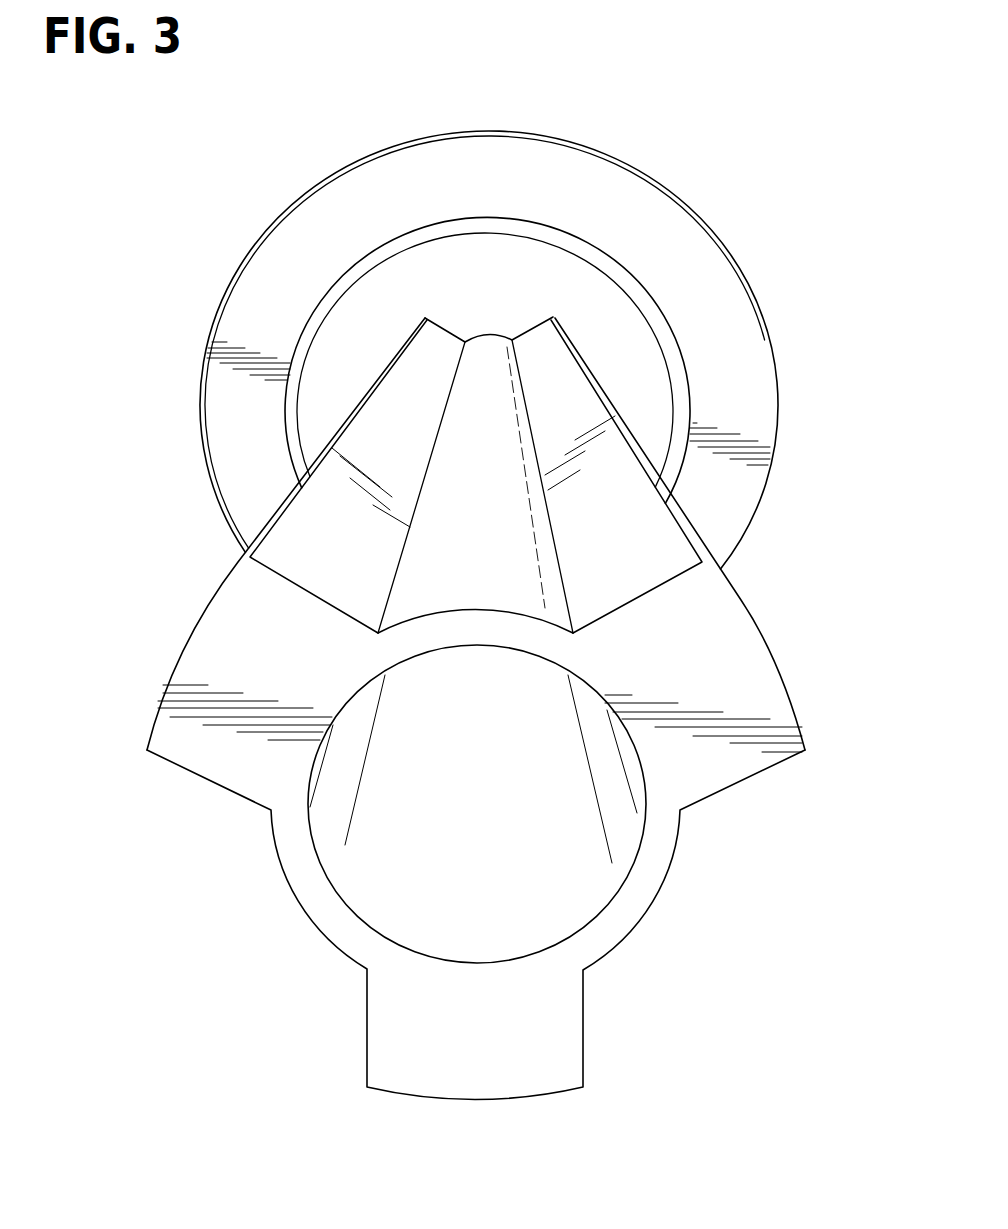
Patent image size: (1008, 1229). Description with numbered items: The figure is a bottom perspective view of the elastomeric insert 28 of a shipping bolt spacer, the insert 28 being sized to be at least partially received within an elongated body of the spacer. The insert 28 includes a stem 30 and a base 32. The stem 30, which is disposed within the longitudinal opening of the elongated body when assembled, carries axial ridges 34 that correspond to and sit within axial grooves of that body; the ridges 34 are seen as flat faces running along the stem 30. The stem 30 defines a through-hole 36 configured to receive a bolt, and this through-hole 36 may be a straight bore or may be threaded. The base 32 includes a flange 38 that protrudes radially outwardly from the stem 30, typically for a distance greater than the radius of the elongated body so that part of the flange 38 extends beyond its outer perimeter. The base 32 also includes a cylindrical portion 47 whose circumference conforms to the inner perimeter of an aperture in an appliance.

The elastomeric insert 28 is at (800, 571).
The stem 30 is at (200, 650).
The base 32 is at (703, 289).
The axial ridges 34 is at (763, 668).
The through-hole 36 is at (387, 875).
The flange 38 is at (487, 172).
The cylindrical portion 47 is at (660, 409).